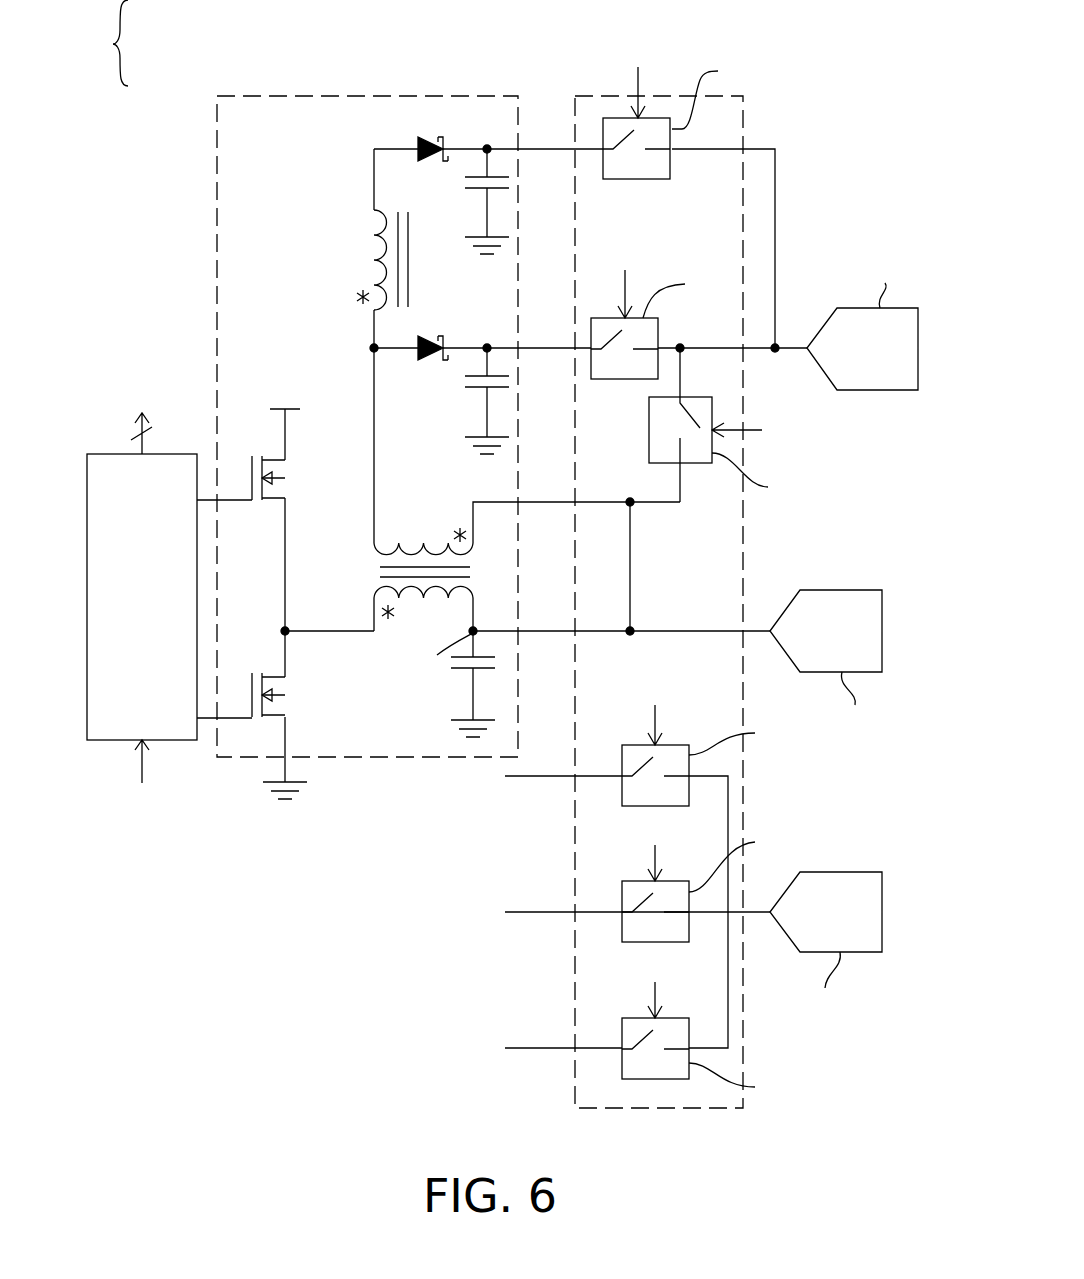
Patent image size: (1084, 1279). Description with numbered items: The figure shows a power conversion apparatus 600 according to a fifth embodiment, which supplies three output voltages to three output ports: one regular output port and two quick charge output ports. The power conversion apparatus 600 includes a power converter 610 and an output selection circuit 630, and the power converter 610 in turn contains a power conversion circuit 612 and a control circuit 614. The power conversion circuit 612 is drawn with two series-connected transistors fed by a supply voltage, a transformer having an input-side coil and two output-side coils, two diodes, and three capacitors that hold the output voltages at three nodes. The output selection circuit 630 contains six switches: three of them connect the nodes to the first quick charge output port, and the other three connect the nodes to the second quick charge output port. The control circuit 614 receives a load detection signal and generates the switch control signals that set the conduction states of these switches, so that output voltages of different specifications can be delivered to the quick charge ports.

The power conversion apparatus 600 is at (493, 579).
The power converter 610 is at (419, 530).
The power conversion circuit 612 is at (309, 96).
The control circuit 614 is at (178, 740).
The output selection circuit 630 is at (743, 128).